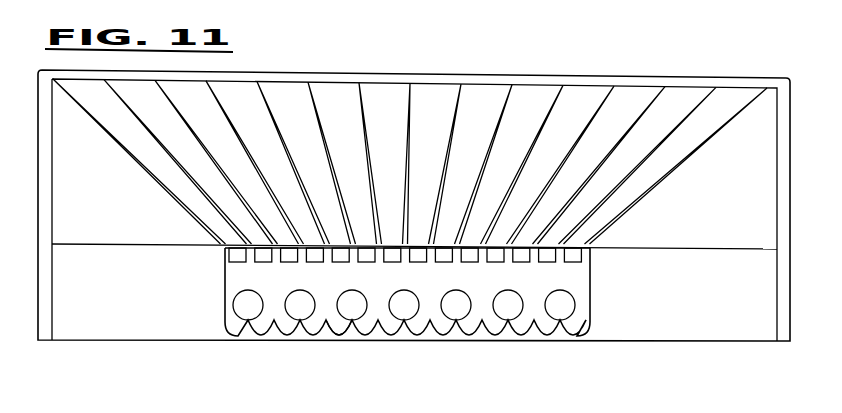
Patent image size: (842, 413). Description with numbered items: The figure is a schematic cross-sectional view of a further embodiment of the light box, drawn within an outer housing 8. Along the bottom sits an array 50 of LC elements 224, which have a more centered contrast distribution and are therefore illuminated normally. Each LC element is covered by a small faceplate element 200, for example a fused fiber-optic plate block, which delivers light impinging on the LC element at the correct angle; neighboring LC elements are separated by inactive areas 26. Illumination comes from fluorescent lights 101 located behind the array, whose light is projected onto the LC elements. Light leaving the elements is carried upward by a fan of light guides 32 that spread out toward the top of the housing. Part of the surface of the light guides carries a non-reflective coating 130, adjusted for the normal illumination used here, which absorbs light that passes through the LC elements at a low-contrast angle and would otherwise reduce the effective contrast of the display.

The flexible circuit substrate 8 is at (530, 78).
The light guides 32 is at (438, 97).
The array 50 is at (600, 255).
The inactive areas 26 is at (479, 332).
The faceplate elements 200 is at (291, 263).
The LC elements 224 is at (227, 264).
The non-reflective coating 130 is at (392, 236).
The fluorescent lights 101 is at (332, 318).